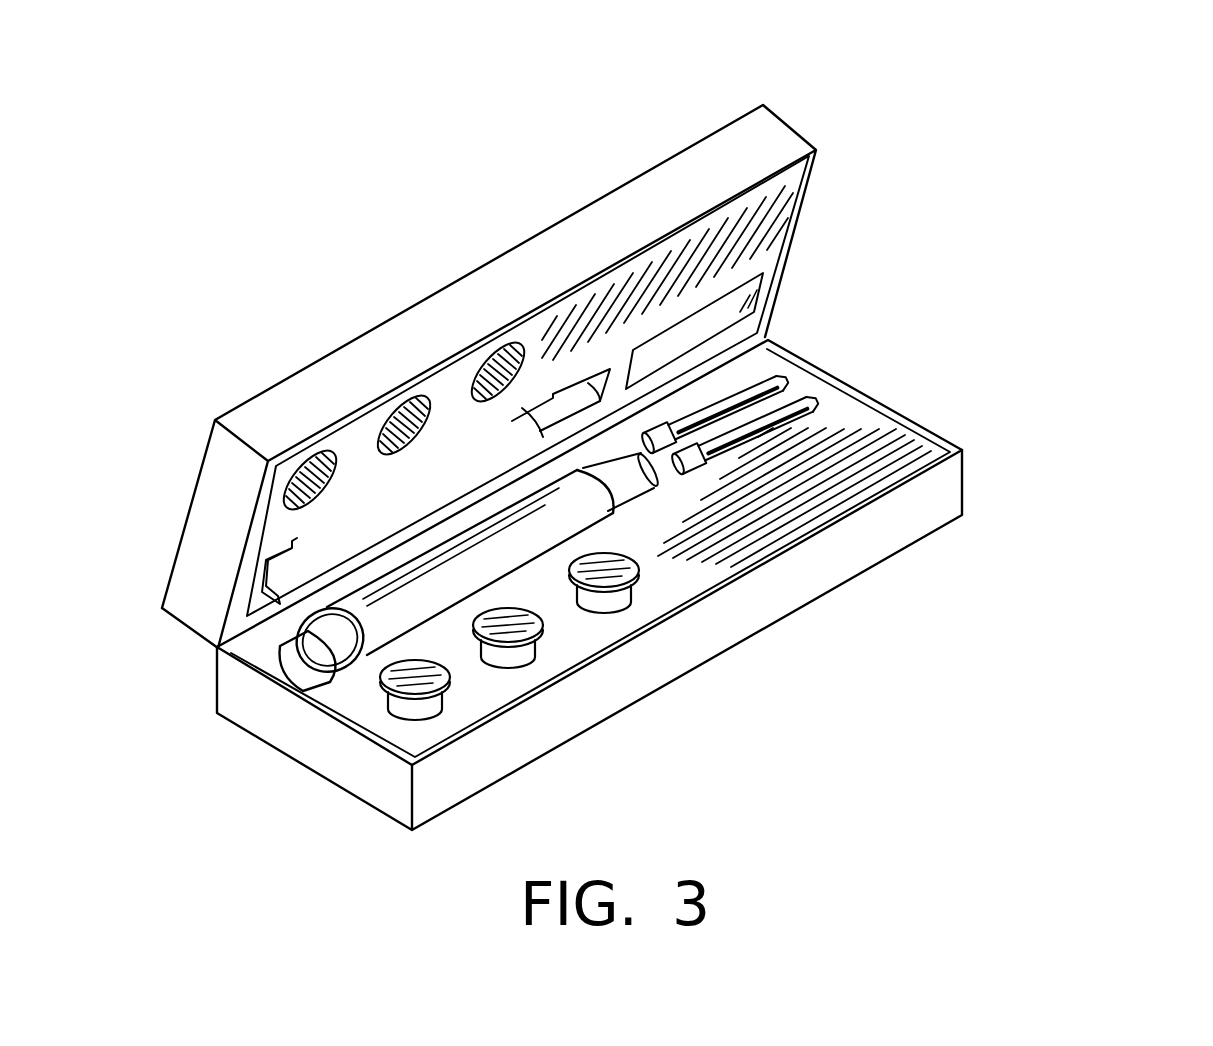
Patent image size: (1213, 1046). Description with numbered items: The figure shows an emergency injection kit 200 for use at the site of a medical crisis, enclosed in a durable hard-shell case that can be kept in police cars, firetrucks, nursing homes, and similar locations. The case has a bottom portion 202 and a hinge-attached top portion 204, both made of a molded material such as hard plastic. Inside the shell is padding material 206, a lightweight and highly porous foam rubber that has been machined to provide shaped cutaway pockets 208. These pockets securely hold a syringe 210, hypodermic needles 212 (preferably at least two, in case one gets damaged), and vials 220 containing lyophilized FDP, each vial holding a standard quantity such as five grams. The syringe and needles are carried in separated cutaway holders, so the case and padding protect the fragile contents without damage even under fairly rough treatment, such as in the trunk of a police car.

The emergency injection kit 200 is at (928, 626).
The bottom portion 202 is at (508, 738).
The top portion 204 is at (398, 353).
The padding material 206 is at (752, 239).
The cutaway pockets 208 is at (633, 347).
The syringe 210 is at (295, 660).
The hypodermic needles 212 is at (767, 418).
The vials 220 is at (645, 592).